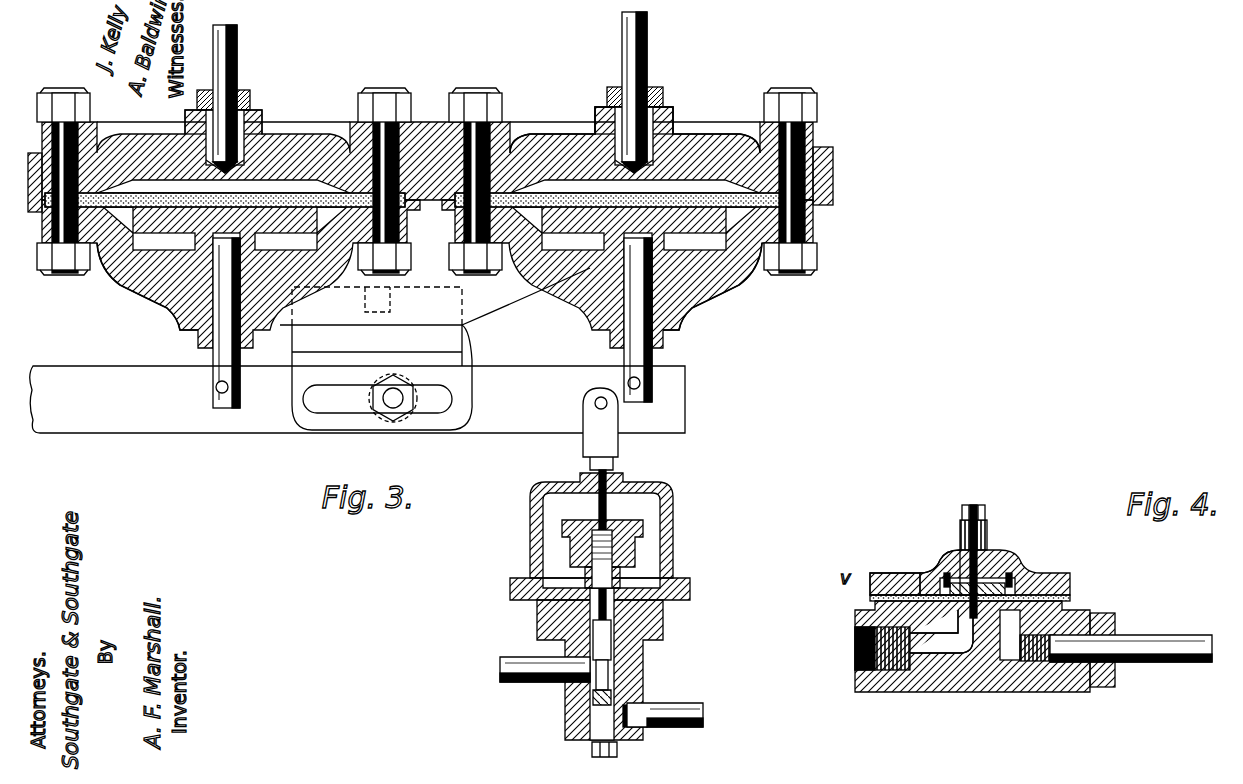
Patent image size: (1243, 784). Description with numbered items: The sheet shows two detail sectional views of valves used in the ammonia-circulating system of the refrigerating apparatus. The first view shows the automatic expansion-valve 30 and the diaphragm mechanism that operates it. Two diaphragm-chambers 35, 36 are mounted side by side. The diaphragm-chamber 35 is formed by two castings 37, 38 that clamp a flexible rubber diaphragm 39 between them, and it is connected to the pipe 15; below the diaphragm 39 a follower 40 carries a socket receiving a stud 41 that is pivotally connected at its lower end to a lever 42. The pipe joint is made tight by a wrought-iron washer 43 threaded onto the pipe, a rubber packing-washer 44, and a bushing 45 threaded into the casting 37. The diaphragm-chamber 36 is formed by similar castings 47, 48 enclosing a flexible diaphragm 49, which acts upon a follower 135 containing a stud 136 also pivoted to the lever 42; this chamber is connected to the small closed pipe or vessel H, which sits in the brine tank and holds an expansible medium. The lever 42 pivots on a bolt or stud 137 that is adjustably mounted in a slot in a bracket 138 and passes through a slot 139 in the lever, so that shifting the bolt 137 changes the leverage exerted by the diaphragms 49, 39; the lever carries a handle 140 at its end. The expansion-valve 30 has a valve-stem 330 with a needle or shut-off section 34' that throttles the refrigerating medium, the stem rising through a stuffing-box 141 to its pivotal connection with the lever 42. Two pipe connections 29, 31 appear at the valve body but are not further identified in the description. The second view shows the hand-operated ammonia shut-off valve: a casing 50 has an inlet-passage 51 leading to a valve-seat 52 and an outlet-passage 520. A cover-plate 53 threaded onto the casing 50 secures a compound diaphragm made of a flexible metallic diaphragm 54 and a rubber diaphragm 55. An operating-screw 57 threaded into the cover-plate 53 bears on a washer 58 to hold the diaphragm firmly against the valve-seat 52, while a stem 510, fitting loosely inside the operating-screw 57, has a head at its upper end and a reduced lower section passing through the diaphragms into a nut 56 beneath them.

In FIG. 3, the closed pipe or vessel H is at (237, 47).
In FIG. 3, the pipe 15 is at (622, 24).
In FIG. 3, the outlet pipe 29 is at (690, 711).
In FIG. 3, the expansion-valve 30 is at (645, 656).
In FIG. 3, the inlet pipe 31 is at (520, 683).
In FIG. 3, the valve-stem 330 is at (595, 646).
In FIG. 3, the needle or shut-off section 34' is at (647, 687).
In FIG. 3, the diaphragm-chamber 35 is at (838, 191).
In FIG. 3, the diaphragm-chamber 36 is at (38, 232).
In FIG. 3, the casting 37 is at (700, 138).
In FIG. 3, the casting 38 is at (715, 282).
In FIG. 3, the flexible rubber diaphragm 39 is at (780, 195).
In FIG. 3, the follower 40 is at (765, 255).
In FIG. 3, the stud 41 is at (655, 354).
In FIG. 3, the lever 42 is at (415, 377).
In FIG. 3, the wrought-iron washer 43 is at (250, 150).
In FIG. 3, the rubber packing-washer 44 is at (268, 118).
In FIG. 3, the bushing 45 is at (247, 100).
In FIG. 3, the casting 47 is at (145, 283).
In FIG. 3, the casting 48 is at (312, 140).
In FIG. 3, the flexible diaphragm 49 is at (100, 270).
In FIG. 3, the follower 135 is at (177, 310).
In FIG. 3, the stud 136 is at (220, 374).
In FIG. 3, the bolt or stud 137 is at (390, 405).
In FIG. 3, the bracket 138 is at (450, 340).
In FIG. 3, the slot 139 is at (437, 410).
In FIG. 3, the handle 140 is at (33, 378).
In FIG. 3, the stuffing-box 141 is at (633, 568).
In FIG. 4, the casing 50 is at (947, 690).
In FIG. 4, the inlet-passage 51 is at (920, 660).
In FIG. 4, the valve-seat 52 is at (1028, 572).
In FIG. 4, the cover-plate 53 is at (882, 580).
In FIG. 4, the flexible metallic diaphragm 54 is at (909, 580).
In FIG. 4, the rubber diaphragm 55 is at (1003, 600).
In FIG. 4, the nut 56 is at (982, 655).
In FIG. 4, the operating-screw 57 is at (988, 518).
In FIG. 4, the washer 58 is at (1000, 570).
In FIG. 4, the stem 510 is at (963, 527).
In FIG. 4, the outlet-passage 520 is at (1027, 624).